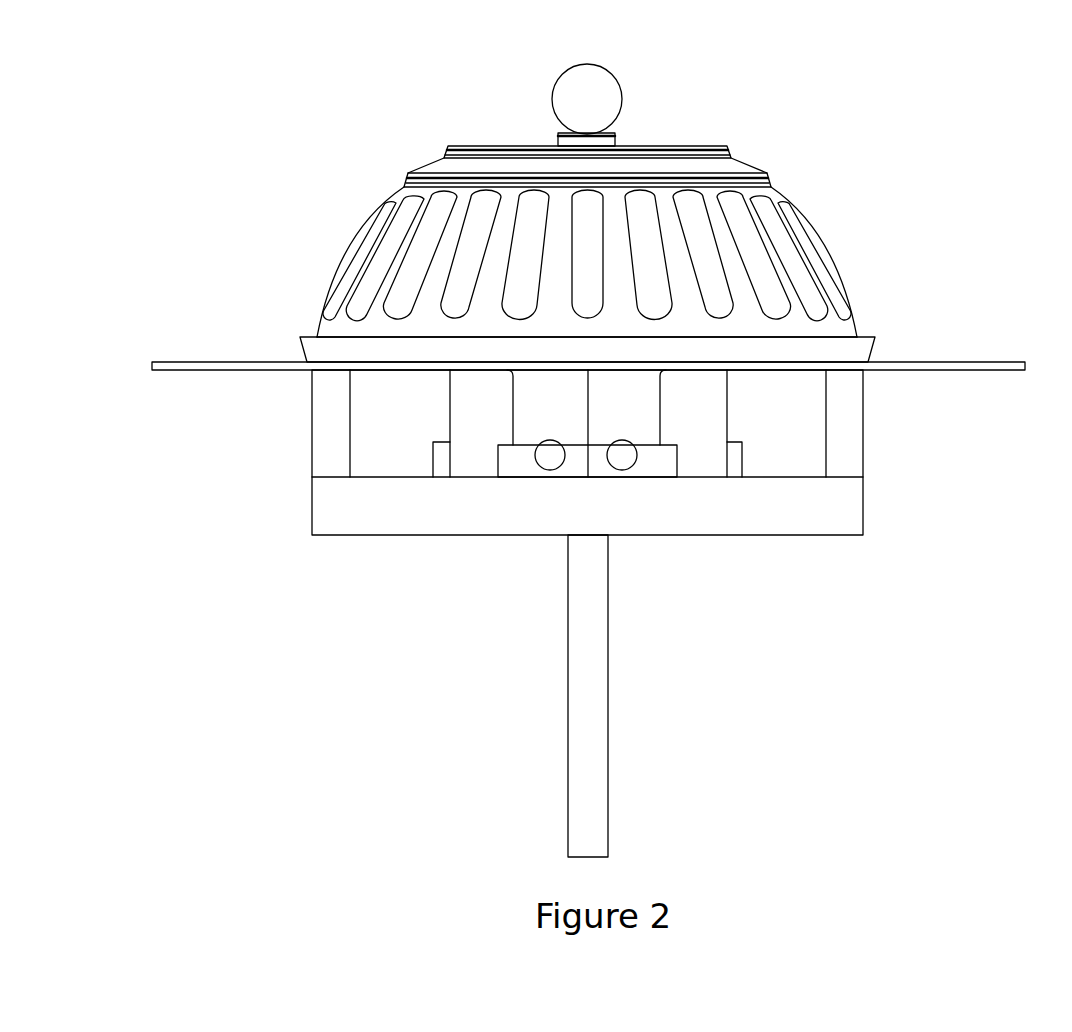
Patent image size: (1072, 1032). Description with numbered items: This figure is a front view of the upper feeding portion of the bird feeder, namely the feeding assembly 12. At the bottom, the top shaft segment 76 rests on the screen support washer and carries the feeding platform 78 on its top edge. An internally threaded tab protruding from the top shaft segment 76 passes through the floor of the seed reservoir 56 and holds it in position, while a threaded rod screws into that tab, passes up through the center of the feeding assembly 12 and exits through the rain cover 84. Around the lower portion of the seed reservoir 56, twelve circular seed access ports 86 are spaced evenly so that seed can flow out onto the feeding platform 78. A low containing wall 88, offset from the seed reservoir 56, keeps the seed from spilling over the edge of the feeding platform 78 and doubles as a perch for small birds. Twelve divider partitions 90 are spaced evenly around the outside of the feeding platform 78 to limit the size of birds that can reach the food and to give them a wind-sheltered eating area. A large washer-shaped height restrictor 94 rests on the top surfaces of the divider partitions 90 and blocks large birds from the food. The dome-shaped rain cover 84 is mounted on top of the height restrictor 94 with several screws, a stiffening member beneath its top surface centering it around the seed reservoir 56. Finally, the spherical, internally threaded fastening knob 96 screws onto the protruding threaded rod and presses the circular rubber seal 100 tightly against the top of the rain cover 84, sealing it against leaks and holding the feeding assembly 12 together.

The feeding assembly 12 is at (224, 648).
The seed reservoir 56 is at (620, 408).
The top shaft segment 76 is at (584, 742).
The feeding platform 78 is at (343, 505).
The rain cover 84 is at (820, 228).
The seed access ports 86 is at (548, 444).
The low containing wall 88 is at (665, 458).
The divider partitions 90 is at (843, 423).
The height restrictor 94 is at (187, 362).
The fastening knob 96 is at (553, 83).
The rubber seal 100 is at (620, 134).